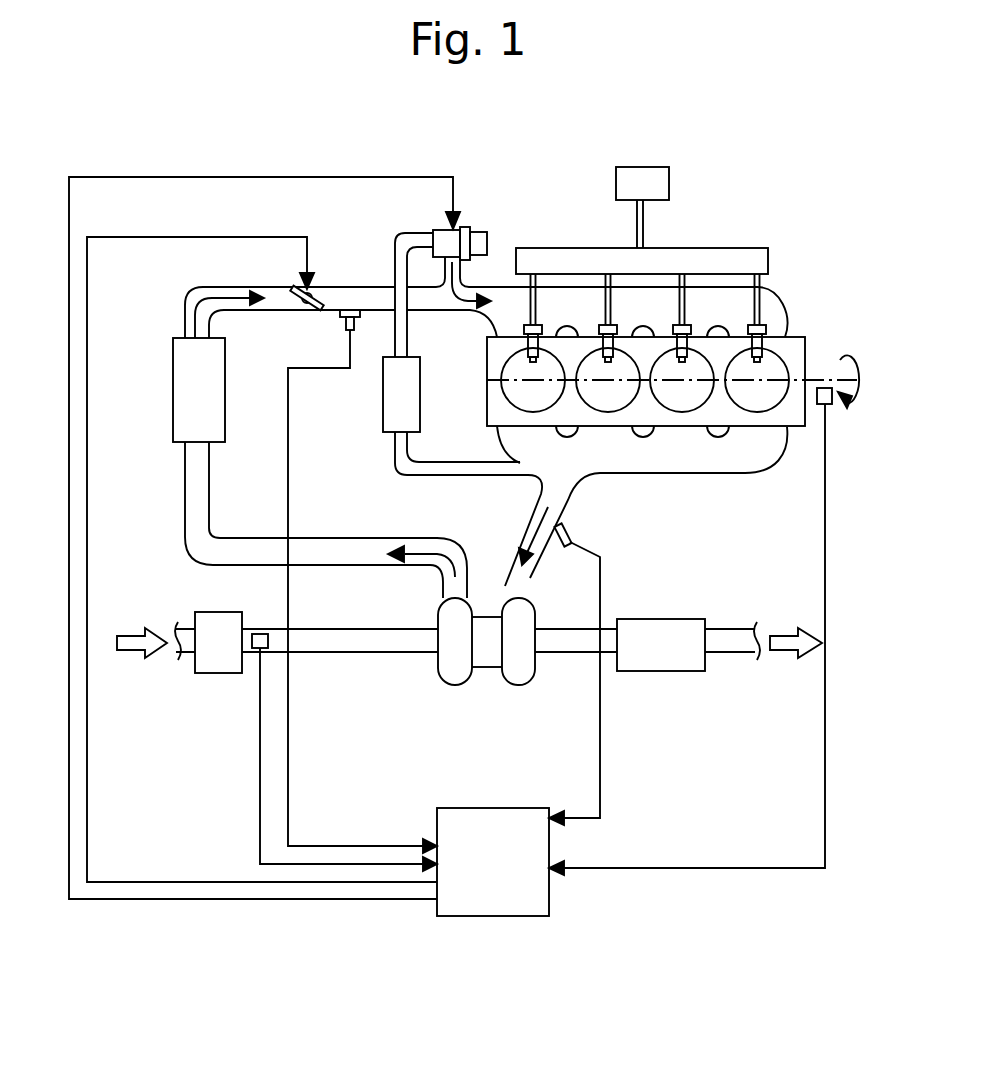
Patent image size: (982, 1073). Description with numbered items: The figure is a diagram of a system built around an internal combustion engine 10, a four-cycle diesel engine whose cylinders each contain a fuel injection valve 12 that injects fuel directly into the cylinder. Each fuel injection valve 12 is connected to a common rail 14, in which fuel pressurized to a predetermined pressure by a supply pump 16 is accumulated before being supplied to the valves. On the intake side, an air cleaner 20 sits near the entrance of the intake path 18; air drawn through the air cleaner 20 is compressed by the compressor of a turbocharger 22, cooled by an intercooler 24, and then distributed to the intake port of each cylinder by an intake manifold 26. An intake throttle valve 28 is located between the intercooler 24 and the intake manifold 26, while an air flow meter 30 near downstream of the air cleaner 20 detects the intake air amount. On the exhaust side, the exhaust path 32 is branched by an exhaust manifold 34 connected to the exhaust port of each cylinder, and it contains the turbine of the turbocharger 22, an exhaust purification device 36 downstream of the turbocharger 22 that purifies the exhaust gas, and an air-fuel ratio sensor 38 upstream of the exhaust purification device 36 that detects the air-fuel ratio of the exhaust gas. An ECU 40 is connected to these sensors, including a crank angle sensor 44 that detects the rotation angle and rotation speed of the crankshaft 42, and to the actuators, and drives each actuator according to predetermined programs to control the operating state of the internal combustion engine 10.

The internal combustion engine 10 is at (745, 166).
The fuel injection valve 12 is at (772, 337).
The common rail 14 is at (735, 248).
The supply pump 16 is at (653, 167).
The intake path 18 is at (351, 535).
The air cleaner 20 is at (197, 612).
The turbocharger 22 is at (473, 698).
The intercooler 24 is at (226, 395).
The intake manifold 26 is at (772, 296).
The intake throttle valve 28 is at (298, 291).
The air flow meter 30 is at (259, 633).
The exhaust path 32 is at (556, 652).
The exhaust manifold 34 is at (690, 476).
The exhaust purification device 36 is at (680, 619).
The air-fuel ratio sensor 38 is at (574, 533).
The ECU 40 is at (511, 808).
The crankshaft 42 is at (815, 372).
The crank angle sensor 44 is at (830, 407).